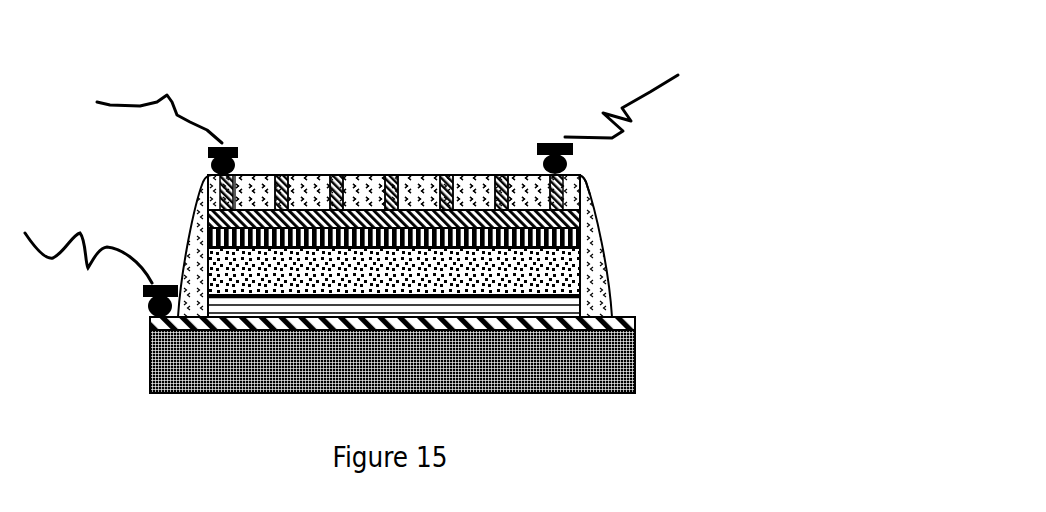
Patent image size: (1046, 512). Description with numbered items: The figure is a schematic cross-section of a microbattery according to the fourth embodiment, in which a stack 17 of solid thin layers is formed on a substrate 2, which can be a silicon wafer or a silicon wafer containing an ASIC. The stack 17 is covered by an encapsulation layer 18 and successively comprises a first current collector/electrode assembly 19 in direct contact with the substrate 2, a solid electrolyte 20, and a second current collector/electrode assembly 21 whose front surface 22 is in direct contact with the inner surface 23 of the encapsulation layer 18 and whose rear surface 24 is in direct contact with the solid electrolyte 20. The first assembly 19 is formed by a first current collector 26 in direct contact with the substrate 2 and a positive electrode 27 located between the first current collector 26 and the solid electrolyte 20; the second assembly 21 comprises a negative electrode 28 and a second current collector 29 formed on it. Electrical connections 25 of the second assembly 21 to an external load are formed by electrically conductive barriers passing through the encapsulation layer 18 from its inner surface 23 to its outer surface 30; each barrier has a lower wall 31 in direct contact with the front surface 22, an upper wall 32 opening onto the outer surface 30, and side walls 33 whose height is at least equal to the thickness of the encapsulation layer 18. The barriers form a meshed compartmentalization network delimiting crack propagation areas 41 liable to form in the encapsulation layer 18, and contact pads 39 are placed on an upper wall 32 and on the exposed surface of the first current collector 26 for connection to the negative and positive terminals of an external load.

The substrate 2 is at (220, 359).
The stack 17 is at (188, 238).
The encapsulation layer 18 is at (169, 222).
The first current collector/electrode assembly 19 is at (455, 280).
The solid electrolyte 20 is at (472, 180).
The second current collector/electrode assembly 21 is at (598, 220).
The front surface 22 is at (583, 185).
The inner surface 23 is at (200, 228).
The rear surface 24 is at (540, 248).
The electrical connections 25 is at (448, 176).
The first current collector 26 is at (553, 330).
The positive electrode 27 is at (530, 302).
The negative electrode 28 is at (300, 175).
The second current collector 29 is at (530, 182).
The outer surface 30 is at (255, 175).
The lower wall 31 is at (375, 212).
The upper wall 32 is at (397, 176).
The side walls 33 is at (386, 204).
The contact pad 39 is at (226, 148).
The crack propagation area 41 is at (400, 205).